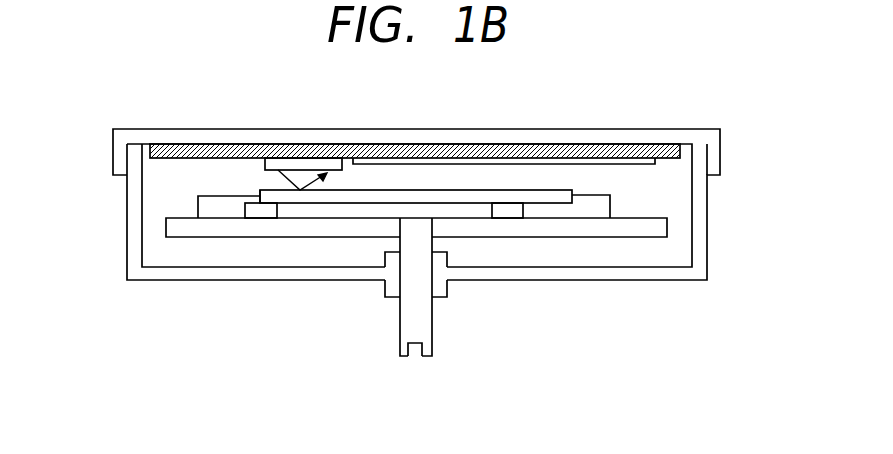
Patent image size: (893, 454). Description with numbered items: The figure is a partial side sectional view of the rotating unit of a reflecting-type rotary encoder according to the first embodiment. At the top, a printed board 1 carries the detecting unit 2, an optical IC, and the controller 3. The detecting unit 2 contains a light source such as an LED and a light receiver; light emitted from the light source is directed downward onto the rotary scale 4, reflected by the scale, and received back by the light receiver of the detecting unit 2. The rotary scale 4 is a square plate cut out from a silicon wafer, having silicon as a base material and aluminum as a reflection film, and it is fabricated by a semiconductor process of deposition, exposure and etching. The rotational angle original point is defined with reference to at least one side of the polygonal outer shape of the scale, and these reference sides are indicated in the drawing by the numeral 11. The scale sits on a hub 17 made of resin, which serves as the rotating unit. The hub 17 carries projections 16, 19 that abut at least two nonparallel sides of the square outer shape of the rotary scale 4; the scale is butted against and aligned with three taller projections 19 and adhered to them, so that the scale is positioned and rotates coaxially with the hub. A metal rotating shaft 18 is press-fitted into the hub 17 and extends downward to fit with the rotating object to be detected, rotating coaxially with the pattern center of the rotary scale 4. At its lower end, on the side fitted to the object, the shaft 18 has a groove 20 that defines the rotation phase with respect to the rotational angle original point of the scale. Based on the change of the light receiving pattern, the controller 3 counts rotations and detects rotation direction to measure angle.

The printed board 1 is at (163, 150).
The detecting unit 2 is at (300, 160).
The controller 3 is at (397, 160).
The rotary scale 4 is at (476, 190).
The sensor unit 11 is at (260, 190).
The projections 16 is at (260, 213).
The hub 17 is at (660, 227).
The rotating shaft 18 is at (398, 324).
The projections 19 is at (207, 205).
The groove 20 is at (412, 357).